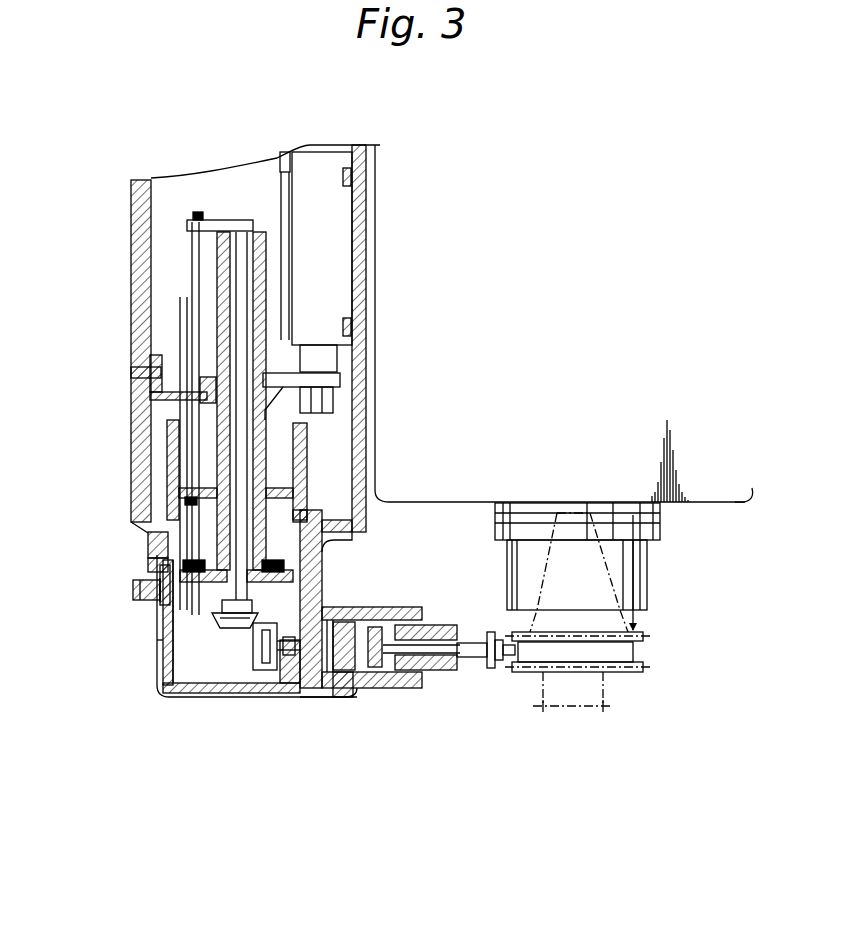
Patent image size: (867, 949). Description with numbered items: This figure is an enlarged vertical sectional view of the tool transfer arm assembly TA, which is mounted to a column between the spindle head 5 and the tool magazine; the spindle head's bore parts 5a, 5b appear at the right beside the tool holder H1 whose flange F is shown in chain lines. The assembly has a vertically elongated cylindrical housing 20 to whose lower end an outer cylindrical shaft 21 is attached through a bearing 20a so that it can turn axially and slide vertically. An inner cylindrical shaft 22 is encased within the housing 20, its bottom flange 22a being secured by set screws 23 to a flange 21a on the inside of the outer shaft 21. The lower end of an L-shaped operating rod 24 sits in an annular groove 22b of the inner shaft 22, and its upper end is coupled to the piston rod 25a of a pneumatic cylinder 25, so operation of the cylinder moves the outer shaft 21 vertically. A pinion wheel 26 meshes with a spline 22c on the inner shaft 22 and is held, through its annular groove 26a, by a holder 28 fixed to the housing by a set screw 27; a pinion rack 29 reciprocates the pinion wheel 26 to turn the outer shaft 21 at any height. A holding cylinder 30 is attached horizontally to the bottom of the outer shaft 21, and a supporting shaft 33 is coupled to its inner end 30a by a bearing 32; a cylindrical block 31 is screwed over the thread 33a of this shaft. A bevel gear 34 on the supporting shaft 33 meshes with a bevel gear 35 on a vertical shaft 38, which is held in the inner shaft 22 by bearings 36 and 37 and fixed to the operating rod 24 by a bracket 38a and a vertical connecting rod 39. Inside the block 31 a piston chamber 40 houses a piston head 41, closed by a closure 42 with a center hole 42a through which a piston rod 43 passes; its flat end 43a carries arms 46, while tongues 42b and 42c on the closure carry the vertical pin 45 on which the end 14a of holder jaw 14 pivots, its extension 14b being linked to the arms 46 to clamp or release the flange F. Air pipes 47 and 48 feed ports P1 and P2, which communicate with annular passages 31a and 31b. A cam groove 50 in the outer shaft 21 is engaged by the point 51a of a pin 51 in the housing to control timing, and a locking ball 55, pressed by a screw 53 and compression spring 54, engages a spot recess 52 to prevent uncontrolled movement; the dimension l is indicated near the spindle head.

The spindle head 5 is at (742, 503).
The bushing 5a is at (647, 568).
The flange of bushing 5b is at (657, 535).
The holder jaw 14 is at (558, 672).
The end of holder jaw 14a is at (540, 632).
The outwardly curved extension 14b is at (512, 672).
The housing 20 is at (131, 292).
The bearing 20a is at (355, 533).
The outer cylindrical shaft 21 is at (160, 690).
The flange 21a is at (220, 655).
The inner cylindrical shaft 22 is at (306, 450).
The bottom flange 22a is at (300, 515).
The annular groove 22b is at (293, 484).
The spline 22c is at (268, 268).
The set screws 23 is at (192, 563).
The L-shaped operating rod 24 is at (368, 425).
The pneumatic cylinder 25 is at (345, 218).
The piston rod 25a is at (337, 365).
The pinion wheel 26 is at (187, 365).
The annular groove 26a is at (149, 360).
The set screw 27 is at (131, 373).
The holder 28 is at (152, 397).
The pinion rack 29 is at (293, 367).
The holding cylinder 30 is at (395, 612).
The inner end of holding cylinder 30a is at (307, 697).
The cylindrical block 31 is at (353, 612).
The annular passage 31a is at (337, 612).
The annular passage 31b is at (372, 612).
The bearing 32 is at (322, 690).
The supporting shaft 33 is at (272, 672).
The thread 33a is at (330, 690).
The bevel gear 34 is at (262, 672).
The bevel gear 35 is at (233, 630).
The bearing 36 is at (252, 603).
The bearing 37 is at (258, 233).
The vertical shaft 38 is at (237, 221).
The bracket 38a is at (208, 203).
The vertical connecting rod 39 is at (192, 263).
The piston chamber 40 is at (410, 625).
The piston head 41 is at (378, 625).
The closure 42 is at (458, 660).
The center hole 42a is at (418, 672).
The horizontal tongue 42b is at (494, 640).
The horizontal tongue 42c is at (485, 665).
The piston rod 43 is at (452, 648).
The flat end 43a is at (472, 668).
The vertical pin 45 is at (503, 640).
The arms 46 is at (490, 638).
The air pipe 47 is at (170, 697).
The air pipe 48 is at (200, 697).
The cam groove 50 is at (141, 500).
The pin 51 is at (150, 567).
The point of pin 51a is at (149, 545).
The spot recess 52 is at (160, 645).
The screw 53 is at (135, 590).
The compression spring 54 is at (155, 600).
The locking ball 55 is at (167, 602).
The tool transfer arm assembly TA is at (96, 601).
The tool holder H1 is at (650, 637).
The flange F is at (645, 666).
The port P1 is at (347, 690).
The port P2 is at (362, 688).
The length l is at (632, 573).